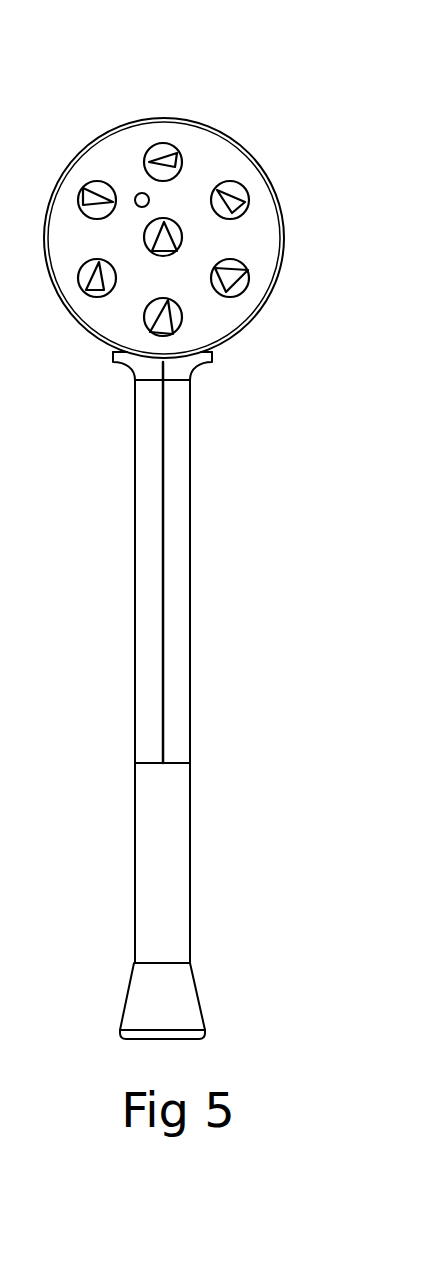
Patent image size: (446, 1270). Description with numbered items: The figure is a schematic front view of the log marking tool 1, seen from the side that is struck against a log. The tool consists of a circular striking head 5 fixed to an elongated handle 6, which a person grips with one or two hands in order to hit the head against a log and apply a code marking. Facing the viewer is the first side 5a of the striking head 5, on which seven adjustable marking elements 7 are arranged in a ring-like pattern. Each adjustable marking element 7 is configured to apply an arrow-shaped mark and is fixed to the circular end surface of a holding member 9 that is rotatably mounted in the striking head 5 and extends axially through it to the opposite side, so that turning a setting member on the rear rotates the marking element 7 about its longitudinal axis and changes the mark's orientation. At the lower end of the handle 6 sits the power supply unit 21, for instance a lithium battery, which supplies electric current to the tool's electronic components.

The log marking tool 1 is at (174, 549).
The striking head 5 is at (175, 229).
The first side of the striking head 5a is at (107, 313).
The handle 6 is at (182, 580).
The adjustable marking element 7 is at (163, 157).
The holding member 9 is at (155, 150).
The power supply unit 21 is at (188, 1005).